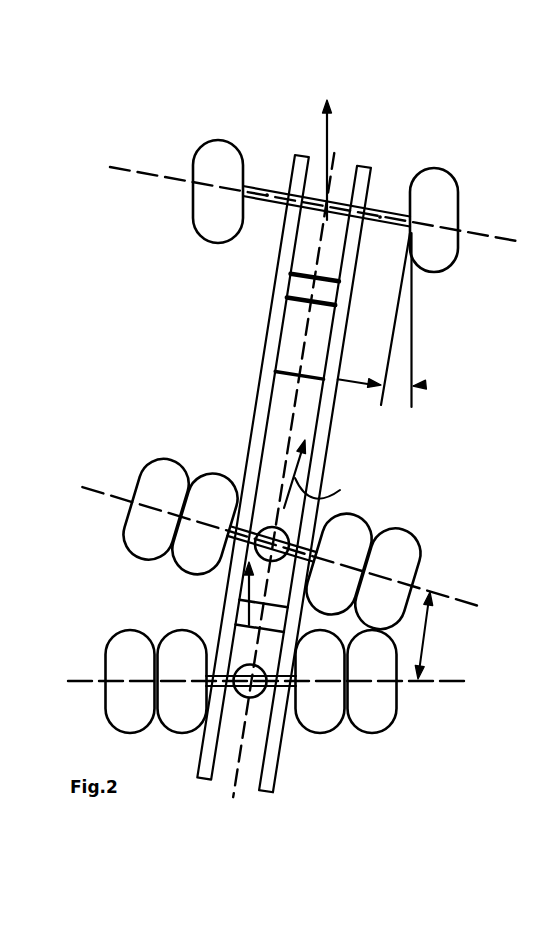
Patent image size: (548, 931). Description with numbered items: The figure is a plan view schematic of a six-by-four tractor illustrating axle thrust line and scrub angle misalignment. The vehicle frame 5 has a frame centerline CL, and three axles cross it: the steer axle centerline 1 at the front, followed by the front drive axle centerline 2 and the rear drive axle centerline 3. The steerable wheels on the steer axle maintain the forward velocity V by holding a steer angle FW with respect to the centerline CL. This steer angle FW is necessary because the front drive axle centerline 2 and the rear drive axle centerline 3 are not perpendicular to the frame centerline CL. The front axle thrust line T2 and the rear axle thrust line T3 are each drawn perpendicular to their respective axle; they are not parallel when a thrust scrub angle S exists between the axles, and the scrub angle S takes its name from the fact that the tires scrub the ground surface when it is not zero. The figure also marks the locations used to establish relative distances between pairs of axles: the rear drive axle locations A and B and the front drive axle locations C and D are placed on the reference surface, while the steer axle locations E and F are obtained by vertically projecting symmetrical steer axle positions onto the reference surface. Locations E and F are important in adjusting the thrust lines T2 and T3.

The steer axle centerline 1 is at (316, 185).
The front drive axle centerline 2 is at (298, 545).
The rear drive axle centerline 3 is at (282, 682).
The vehicle frame 5 is at (260, 372).
The steer axle location E is at (267, 194).
The steer axle location F is at (380, 217).
The forward velocity V is at (327, 143).
The steer angle FW is at (422, 385).
The centerline of the vehicle frame CL is at (298, 398).
The front drive axle location D is at (180, 517).
The front drive axle location C is at (363, 572).
The rear drive axle location A is at (92, 680).
The rear drive axle location B is at (405, 682).
The front axle thrust line T2 is at (321, 474).
The rear axle thrust line T3 is at (226, 607).
The thrust scrub angle S is at (431, 635).